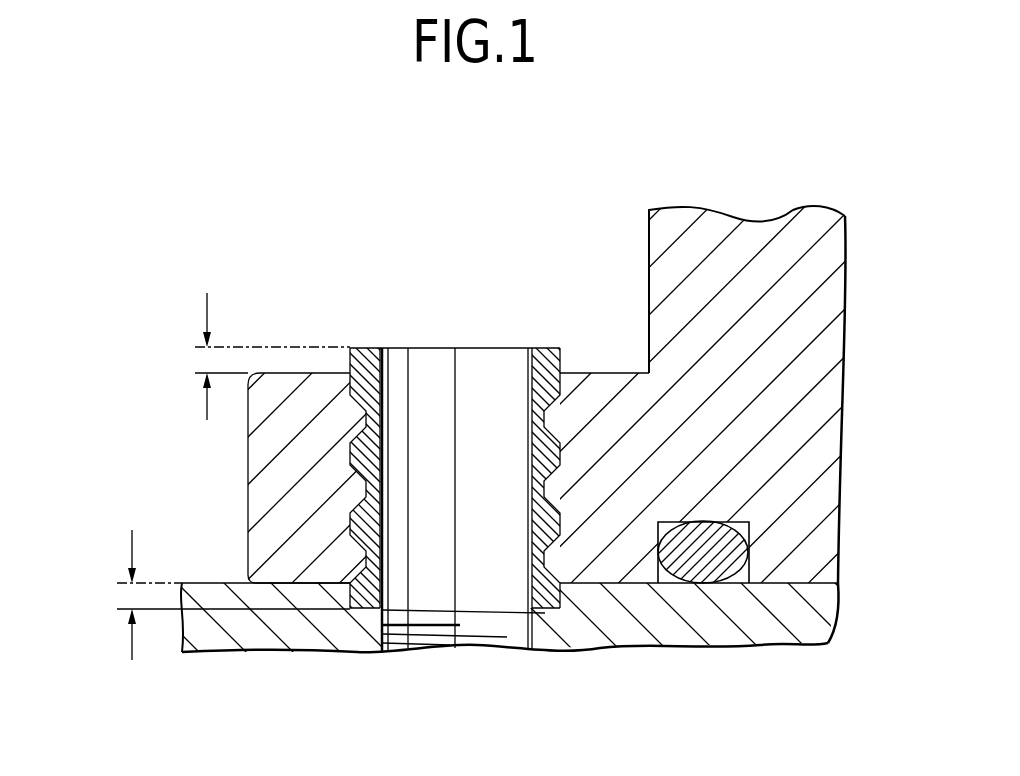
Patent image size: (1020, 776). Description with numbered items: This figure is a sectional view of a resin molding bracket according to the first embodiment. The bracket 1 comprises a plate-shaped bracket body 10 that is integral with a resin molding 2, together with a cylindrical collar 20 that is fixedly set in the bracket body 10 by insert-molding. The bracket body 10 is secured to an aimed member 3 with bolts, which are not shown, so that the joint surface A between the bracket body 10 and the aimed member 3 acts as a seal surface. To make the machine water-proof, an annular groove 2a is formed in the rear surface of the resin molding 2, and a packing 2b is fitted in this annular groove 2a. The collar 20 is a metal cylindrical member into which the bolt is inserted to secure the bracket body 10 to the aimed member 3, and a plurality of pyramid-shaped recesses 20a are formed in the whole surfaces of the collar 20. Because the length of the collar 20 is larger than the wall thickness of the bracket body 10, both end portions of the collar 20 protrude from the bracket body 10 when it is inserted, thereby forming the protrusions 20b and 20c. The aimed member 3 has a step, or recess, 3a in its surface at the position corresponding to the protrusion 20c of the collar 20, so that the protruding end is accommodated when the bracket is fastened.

The bracket 1 is at (240, 483).
The resin molding 2 is at (795, 301).
The annular groove 2a is at (749, 548).
The packing 2b is at (703, 521).
The aimed member 3 is at (333, 631).
The step (recess) 3a is at (542, 608).
The bracket body 10 is at (600, 385).
The collar 20 is at (400, 388).
The pyramid-shaped recesses 20a is at (352, 466).
The protrusion 20b is at (207, 360).
The protrusion 20c is at (132, 594).
The joint surface A is at (792, 583).